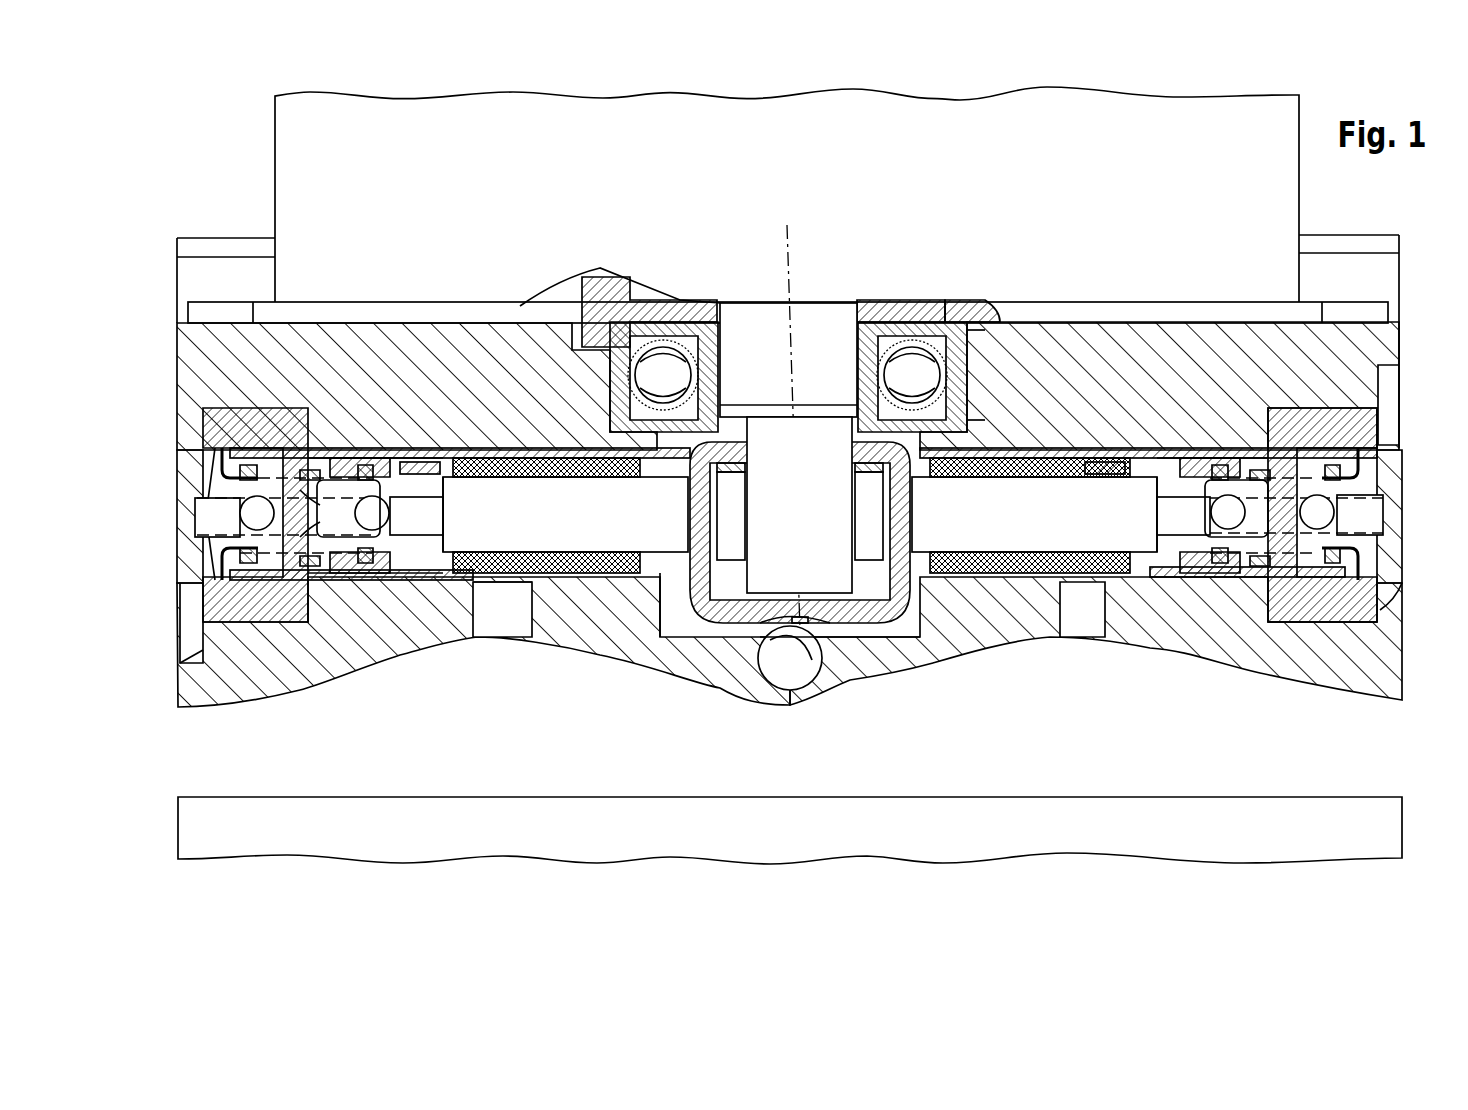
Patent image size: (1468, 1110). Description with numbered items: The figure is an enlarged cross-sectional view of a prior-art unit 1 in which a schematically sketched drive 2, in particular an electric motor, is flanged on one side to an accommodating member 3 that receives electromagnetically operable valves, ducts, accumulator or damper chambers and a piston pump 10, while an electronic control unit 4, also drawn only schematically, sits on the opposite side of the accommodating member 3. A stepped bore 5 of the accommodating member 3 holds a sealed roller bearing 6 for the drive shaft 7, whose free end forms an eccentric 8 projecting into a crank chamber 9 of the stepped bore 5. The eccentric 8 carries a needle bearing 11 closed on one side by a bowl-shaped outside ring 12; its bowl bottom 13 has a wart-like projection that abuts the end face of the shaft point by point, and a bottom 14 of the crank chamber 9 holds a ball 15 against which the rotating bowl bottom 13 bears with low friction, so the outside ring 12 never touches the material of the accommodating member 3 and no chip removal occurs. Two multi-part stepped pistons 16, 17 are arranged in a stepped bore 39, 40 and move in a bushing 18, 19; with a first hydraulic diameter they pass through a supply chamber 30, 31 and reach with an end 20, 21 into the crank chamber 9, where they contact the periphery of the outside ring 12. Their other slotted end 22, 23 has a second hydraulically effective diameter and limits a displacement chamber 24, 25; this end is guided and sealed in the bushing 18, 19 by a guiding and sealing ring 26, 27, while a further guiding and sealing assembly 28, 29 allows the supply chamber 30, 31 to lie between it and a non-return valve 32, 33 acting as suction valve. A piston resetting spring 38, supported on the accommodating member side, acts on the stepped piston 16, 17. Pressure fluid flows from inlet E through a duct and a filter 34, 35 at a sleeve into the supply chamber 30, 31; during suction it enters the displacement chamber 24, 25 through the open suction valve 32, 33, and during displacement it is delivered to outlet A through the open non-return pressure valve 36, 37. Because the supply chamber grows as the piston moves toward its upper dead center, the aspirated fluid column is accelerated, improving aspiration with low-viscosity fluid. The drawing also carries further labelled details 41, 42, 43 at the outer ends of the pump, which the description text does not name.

The unit 1 is at (258, 158).
The drive 2 is at (345, 115).
The accommodating member 3 is at (235, 340).
The electronic control unit 4 is at (290, 822).
The stepped bore 5 is at (972, 350).
The sealed roller bearing 6 is at (957, 345).
The drive shaft 7 is at (835, 315).
The eccentric 8 is at (770, 440).
The crank chamber 9 is at (672, 615).
The piston pump 10 is at (700, 670).
The needle bearing 11 is at (712, 600).
The outside ring 12 is at (748, 620).
The bowl bottom 13 is at (762, 618).
The bottom of the crank chamber 14 is at (860, 632).
The ball 15 is at (790, 660).
The stepped piston 16 is at (610, 515).
The stepped piston 17 is at (990, 530).
The bushing 18 is at (455, 585).
The bushing 19 is at (1145, 590).
The end 20 is at (653, 528).
The end 21 is at (916, 528).
The slotted end 22 is at (453, 528).
The slotted end 23 is at (1115, 528).
The displacement chamber 24 is at (385, 595).
The displacement chamber 25 is at (1290, 545).
The guiding and sealing ring 26 is at (405, 585).
The guiding and sealing ring 27 is at (1240, 560).
The guiding and sealing assembly 28 is at (585, 565).
The guiding and sealing assembly 29 is at (960, 585).
The supply chamber 30 is at (540, 568).
The supply chamber 31 is at (1035, 585).
The non-return valve 32 is at (355, 460).
The non-return valve 33 is at (1310, 600).
The filter 34 is at (470, 568).
The filter 35 is at (1040, 450).
The non-return valve 36 is at (215, 488).
The non-return valve 37 is at (1360, 487).
The piston resetting spring 38 is at (385, 470).
The stepped bore 39 is at (492, 450).
The stepped bore 40 is at (1083, 462).
The joint fork 41 is at (318, 537).
The housing flange 42 is at (182, 585).
The housing flange 43 is at (1395, 568).